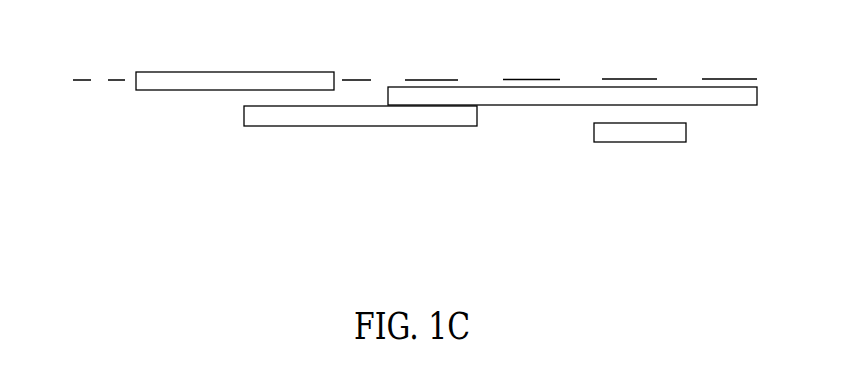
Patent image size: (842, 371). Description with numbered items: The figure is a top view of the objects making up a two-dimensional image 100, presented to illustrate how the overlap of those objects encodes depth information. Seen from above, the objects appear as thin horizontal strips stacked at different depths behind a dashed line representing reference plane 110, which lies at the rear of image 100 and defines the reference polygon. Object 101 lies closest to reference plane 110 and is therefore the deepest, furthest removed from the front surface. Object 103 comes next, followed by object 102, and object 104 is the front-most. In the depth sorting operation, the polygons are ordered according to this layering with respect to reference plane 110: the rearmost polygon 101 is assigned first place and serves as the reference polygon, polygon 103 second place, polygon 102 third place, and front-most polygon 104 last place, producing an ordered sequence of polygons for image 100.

The two-dimensional image 100 is at (73, 185).
The object 101 is at (154, 90).
The object 102 is at (312, 126).
The object 103 is at (739, 105).
The object 104 is at (637, 142).
The reference plane 110 is at (438, 80).